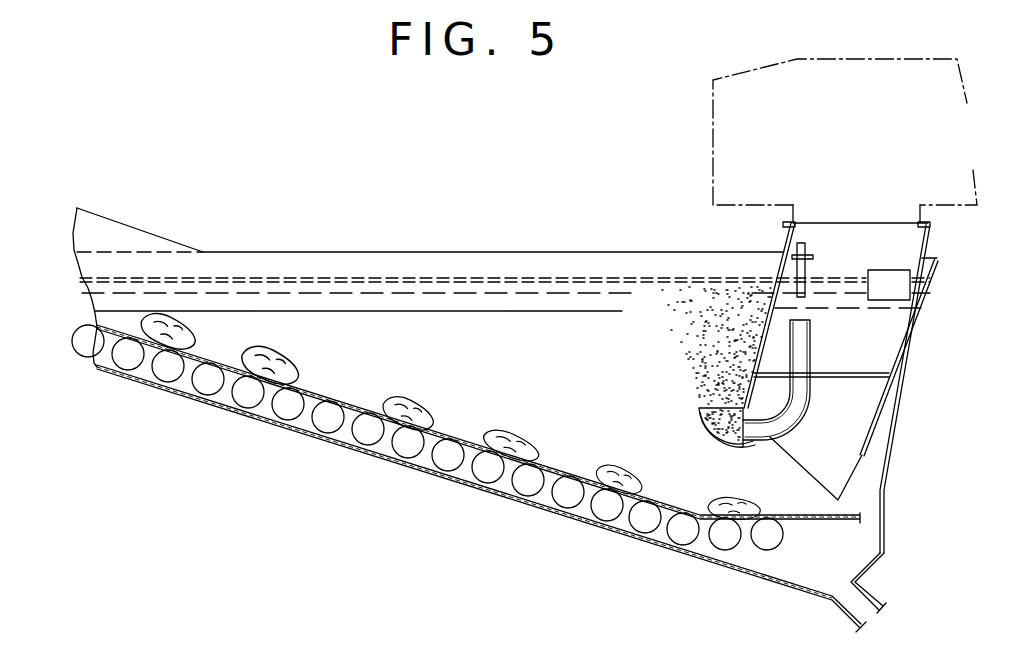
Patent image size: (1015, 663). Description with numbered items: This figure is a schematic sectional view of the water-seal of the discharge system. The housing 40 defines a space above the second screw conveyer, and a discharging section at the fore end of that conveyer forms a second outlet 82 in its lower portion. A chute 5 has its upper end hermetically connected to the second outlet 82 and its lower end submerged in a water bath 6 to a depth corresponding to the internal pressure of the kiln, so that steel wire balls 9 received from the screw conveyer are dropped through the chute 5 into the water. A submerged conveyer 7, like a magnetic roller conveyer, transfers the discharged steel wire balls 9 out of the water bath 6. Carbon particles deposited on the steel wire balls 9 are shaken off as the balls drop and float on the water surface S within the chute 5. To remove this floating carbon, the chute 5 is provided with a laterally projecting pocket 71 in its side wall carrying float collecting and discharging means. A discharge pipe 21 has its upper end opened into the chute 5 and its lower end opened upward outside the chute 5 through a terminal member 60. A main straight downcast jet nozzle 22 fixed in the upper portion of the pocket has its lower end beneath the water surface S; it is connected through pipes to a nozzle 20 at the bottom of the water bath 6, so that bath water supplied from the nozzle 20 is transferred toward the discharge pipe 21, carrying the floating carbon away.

The chute 5 is at (783, 234).
The water bath 6 is at (899, 410).
The conveyer 7 is at (546, 478).
The steel wire balls 9 is at (437, 421).
The nozzle 20 is at (872, 595).
The discharge pipe 21 is at (813, 353).
The main straight downcast jet nozzle 22 is at (807, 242).
The housing 40 is at (883, 57).
The terminal member 60 is at (706, 429).
The pocket 71 is at (892, 276).
The second outlet 82 is at (926, 216).
The water surface S is at (849, 284).